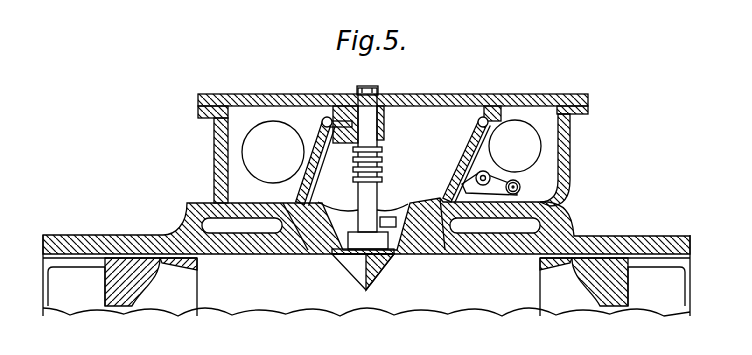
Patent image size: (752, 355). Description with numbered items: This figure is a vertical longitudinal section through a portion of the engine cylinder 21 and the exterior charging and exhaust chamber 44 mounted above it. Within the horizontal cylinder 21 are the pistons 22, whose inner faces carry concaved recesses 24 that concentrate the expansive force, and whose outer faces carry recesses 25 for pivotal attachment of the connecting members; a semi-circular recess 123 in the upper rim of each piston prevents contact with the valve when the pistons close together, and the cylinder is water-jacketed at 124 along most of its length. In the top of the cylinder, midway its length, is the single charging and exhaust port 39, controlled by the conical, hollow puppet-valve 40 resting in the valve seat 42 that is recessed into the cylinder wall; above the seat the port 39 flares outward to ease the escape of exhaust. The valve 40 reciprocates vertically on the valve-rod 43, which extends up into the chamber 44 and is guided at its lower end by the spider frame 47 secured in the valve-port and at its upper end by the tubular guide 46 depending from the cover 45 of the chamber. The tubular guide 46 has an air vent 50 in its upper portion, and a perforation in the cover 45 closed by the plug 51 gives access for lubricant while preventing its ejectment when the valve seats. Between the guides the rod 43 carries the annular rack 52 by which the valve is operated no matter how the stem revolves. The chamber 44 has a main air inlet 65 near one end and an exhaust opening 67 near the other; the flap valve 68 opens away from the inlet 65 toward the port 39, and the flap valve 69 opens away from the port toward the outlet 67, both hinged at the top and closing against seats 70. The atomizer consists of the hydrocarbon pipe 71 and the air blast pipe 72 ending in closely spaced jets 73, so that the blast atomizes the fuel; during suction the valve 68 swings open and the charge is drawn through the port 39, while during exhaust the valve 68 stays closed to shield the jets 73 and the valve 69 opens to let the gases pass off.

The engine cylinder 21 is at (644, 236).
The piston 22 is at (366, 282).
The concaved recess 24 is at (358, 287).
The recess 25 is at (366, 286).
The charging and exhaust port 39 is at (411, 206).
The puppet-valve 40 is at (358, 267).
The valve seat 42 is at (313, 254).
The valve-rod 43 is at (378, 188).
The charging and exhaust chamber 44 is at (349, 154).
The top or cover 45 is at (309, 96).
The tubular guide 46 is at (384, 128).
The spider frame 47 is at (358, 204).
The air vent 50 is at (409, 102).
The plug 51 is at (368, 88).
The annular rack 52 is at (382, 167).
The main air inlet 65 is at (515, 146).
The exhaust opening 67 is at (273, 152).
The flap valve 68 is at (458, 164).
The flap valve 69 is at (299, 190).
The seat 70 is at (316, 186).
The hydrocarbon pipe 71 is at (514, 180).
The air blast pipe 72 is at (483, 172).
The jet 73 is at (477, 193).
The semi-circular recess 123 is at (197, 265).
The water-jacket 124 is at (218, 226).